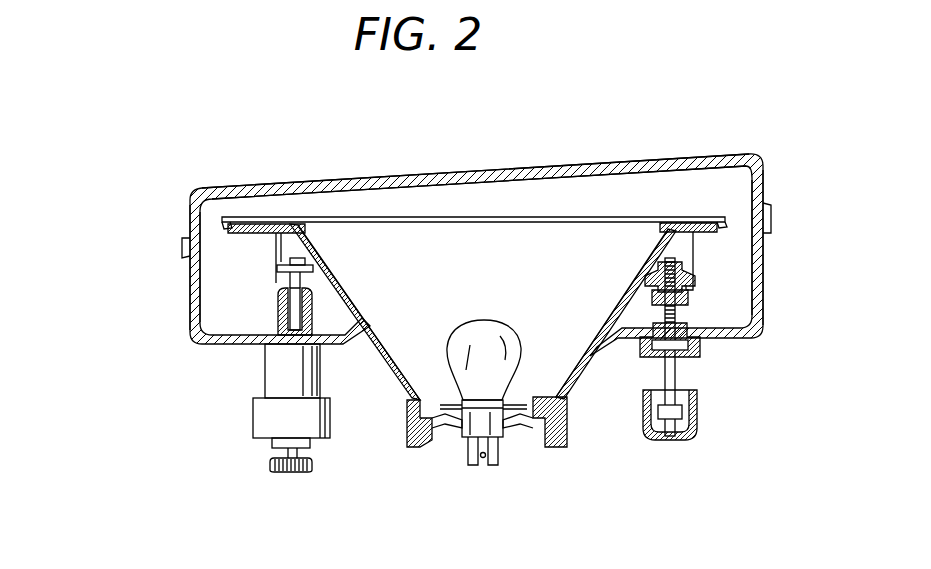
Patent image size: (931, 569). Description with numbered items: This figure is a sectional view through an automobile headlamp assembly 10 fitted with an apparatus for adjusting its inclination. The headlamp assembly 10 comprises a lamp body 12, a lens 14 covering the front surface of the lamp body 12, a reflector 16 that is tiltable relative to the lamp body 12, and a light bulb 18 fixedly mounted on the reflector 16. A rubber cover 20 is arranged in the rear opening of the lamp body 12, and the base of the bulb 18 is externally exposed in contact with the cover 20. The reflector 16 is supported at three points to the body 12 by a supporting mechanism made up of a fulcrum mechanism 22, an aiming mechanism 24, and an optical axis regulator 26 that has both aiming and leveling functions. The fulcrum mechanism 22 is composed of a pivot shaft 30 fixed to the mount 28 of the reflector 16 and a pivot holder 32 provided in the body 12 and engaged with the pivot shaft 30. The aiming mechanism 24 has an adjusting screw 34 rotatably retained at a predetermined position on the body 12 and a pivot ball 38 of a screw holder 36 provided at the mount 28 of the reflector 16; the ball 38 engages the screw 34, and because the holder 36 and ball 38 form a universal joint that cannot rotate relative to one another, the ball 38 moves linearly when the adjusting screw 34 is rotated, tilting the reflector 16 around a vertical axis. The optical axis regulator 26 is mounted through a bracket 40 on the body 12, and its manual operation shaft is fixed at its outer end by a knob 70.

The headlamp assembly 10 is at (298, 176).
The lamp body 12 is at (388, 392).
The lens 14 is at (490, 158).
The reflector 16 is at (368, 310).
The light bulb 18 is at (490, 320).
The rubber cover 20 is at (428, 452).
The fulcrum mechanism 22 is at (234, 282).
The aiming mechanism 24 is at (704, 272).
The optical axis regulator 26 is at (276, 419).
The mount 28 is at (275, 243).
The pivot shaft 30 is at (275, 267).
The pivot holder 32 is at (280, 318).
The adjusting screw 34 is at (677, 373).
The screw holder 36 is at (652, 275).
The pivot ball 38 is at (688, 297).
The bracket 40 is at (276, 374).
The knob 70 is at (306, 474).